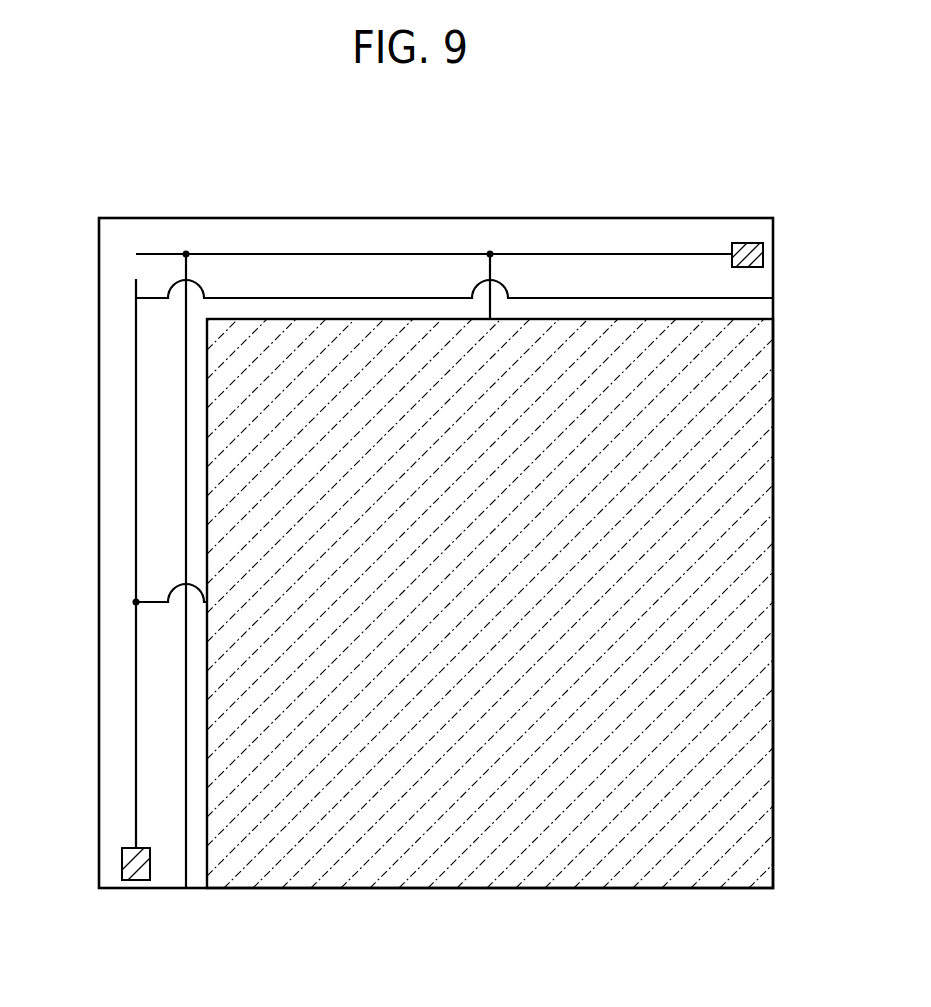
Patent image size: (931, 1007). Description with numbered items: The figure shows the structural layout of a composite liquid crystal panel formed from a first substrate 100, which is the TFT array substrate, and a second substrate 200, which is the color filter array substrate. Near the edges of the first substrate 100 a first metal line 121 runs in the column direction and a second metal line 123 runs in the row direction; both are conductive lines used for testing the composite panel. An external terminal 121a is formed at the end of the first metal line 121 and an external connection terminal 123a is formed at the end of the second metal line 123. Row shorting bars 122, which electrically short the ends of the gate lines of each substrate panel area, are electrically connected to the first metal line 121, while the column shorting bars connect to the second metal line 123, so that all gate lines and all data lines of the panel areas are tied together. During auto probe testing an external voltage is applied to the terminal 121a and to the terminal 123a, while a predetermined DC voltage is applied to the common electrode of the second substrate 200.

The first substrate 100 is at (674, 218).
The second substrate 200 is at (738, 593).
The first metal line 121 is at (136, 718).
The external terminal 121a is at (130, 880).
The row shorting bar 122 is at (760, 298).
The second metal line 123 is at (577, 254).
The external connection terminal 123a is at (764, 252).